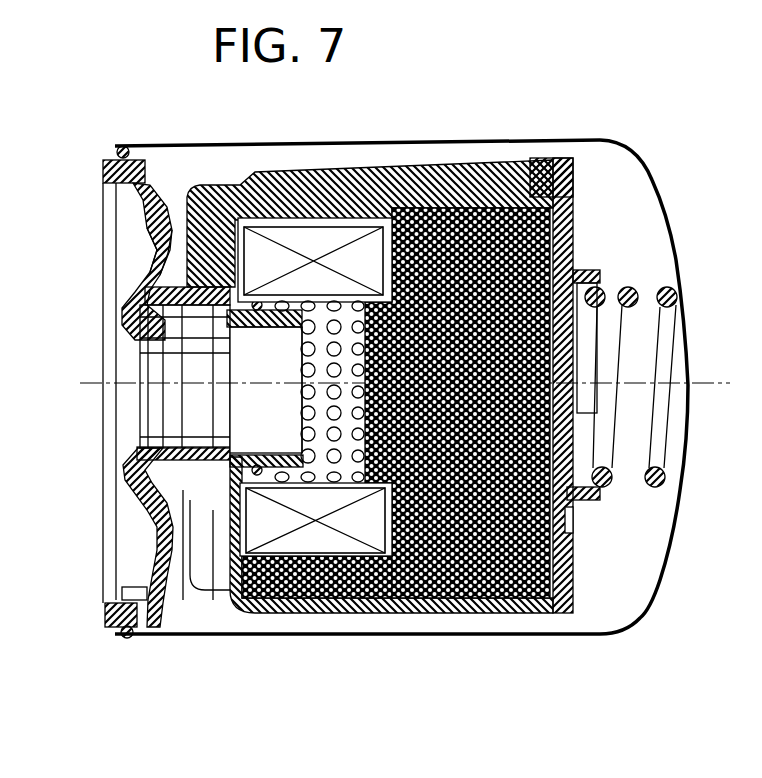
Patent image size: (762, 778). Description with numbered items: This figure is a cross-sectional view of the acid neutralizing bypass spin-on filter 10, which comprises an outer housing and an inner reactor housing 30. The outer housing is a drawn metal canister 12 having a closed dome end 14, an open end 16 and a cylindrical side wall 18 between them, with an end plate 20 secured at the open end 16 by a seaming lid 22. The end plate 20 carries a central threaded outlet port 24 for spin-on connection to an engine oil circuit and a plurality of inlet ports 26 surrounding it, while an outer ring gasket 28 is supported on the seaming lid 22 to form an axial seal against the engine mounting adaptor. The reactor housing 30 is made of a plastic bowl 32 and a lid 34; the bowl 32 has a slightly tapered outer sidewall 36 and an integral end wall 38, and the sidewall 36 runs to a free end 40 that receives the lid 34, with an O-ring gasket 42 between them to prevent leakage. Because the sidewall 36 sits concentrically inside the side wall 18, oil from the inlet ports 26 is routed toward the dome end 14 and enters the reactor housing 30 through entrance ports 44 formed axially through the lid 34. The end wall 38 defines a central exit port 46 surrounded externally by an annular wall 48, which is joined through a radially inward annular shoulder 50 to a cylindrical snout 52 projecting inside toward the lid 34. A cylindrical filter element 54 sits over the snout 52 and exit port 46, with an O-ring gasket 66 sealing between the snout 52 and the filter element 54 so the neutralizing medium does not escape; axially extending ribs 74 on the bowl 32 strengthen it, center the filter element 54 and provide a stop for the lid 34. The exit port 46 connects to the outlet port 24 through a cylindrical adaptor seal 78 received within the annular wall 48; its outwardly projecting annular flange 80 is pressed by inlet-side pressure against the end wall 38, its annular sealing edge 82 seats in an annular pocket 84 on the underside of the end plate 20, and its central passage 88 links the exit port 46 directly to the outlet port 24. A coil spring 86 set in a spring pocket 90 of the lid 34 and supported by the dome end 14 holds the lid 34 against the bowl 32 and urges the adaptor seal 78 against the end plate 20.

The filter 10 is at (100, 95).
The canister 12 is at (525, 638).
The closed dome end 14 is at (690, 353).
The open end 16 is at (162, 607).
The cylindrical side wall 18 is at (268, 636).
The end plate 20 is at (147, 517).
The seaming lid 22 is at (147, 565).
The outlet port 24 is at (150, 355).
The inlet ports 26 is at (150, 278).
The outer ring gasket 28 is at (103, 172).
The reactor housing 30 is at (446, 616).
The bowl 32 is at (380, 616).
The lid 34 is at (573, 560).
The outer sidewall 36 is at (477, 614).
The end wall 38 is at (222, 183).
The free end 40 is at (586, 178).
The O-ring gasket 42 is at (545, 158).
The entrance ports 44 is at (573, 512).
The exit port 46 is at (245, 368).
The annular wall 48 is at (183, 490).
The annular shoulder 50 is at (210, 510).
The snout 52 is at (293, 228).
The filter element 54 is at (366, 196).
The O-ring gasket 66 is at (258, 290).
The ribs 74 is at (488, 160).
The adaptor seal 78 is at (165, 282).
The plunger flange 80 is at (240, 463).
The annular sealing edge 82 is at (125, 468).
The annular pocket 84 is at (140, 435).
The coil spring 86 is at (628, 285).
The central passage 88 is at (172, 408).
The spring pocket 90 is at (593, 275).